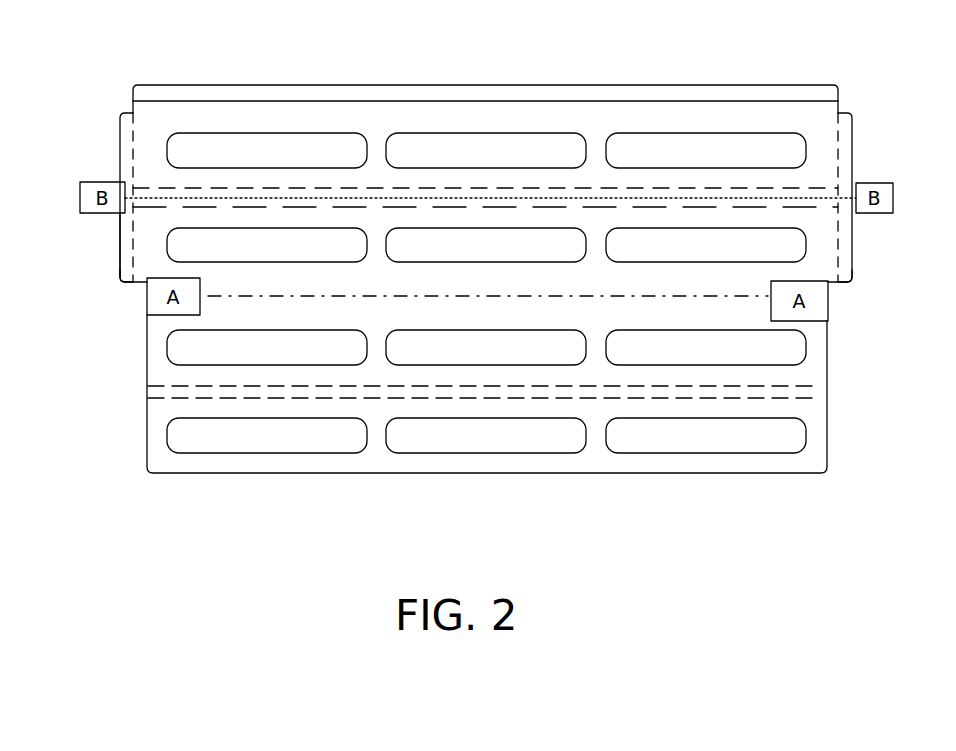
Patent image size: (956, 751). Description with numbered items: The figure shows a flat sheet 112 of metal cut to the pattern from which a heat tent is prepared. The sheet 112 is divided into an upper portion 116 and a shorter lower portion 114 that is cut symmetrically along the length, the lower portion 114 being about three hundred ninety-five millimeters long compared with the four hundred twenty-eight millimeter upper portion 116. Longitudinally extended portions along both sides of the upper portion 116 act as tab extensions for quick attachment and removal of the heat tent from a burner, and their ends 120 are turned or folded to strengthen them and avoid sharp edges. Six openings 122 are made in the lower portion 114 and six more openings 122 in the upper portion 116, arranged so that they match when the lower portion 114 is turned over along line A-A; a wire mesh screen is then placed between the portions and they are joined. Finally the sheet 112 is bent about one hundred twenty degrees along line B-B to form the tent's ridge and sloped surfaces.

The sheet 112 is at (265, 84).
The lower portion 114 is at (124, 445).
The upper portion 116 is at (112, 152).
The ends of the tab extensions 120 is at (120, 228).
The openings 122 is at (668, 147).